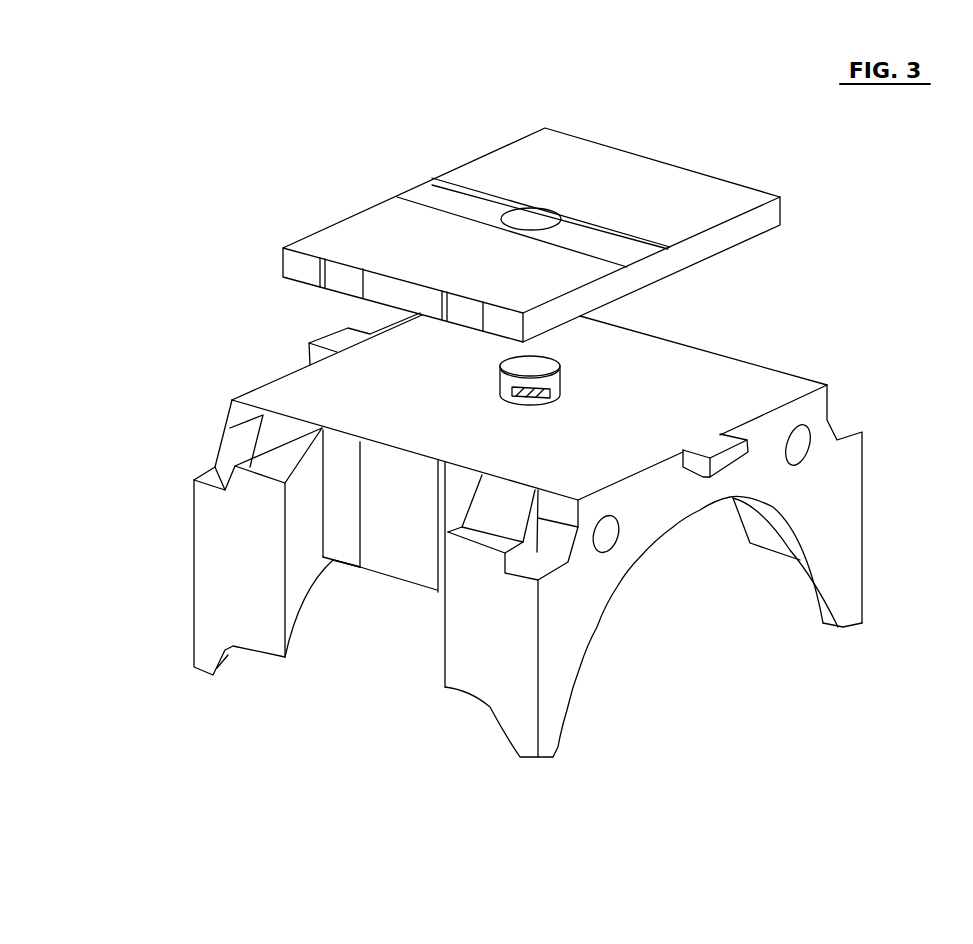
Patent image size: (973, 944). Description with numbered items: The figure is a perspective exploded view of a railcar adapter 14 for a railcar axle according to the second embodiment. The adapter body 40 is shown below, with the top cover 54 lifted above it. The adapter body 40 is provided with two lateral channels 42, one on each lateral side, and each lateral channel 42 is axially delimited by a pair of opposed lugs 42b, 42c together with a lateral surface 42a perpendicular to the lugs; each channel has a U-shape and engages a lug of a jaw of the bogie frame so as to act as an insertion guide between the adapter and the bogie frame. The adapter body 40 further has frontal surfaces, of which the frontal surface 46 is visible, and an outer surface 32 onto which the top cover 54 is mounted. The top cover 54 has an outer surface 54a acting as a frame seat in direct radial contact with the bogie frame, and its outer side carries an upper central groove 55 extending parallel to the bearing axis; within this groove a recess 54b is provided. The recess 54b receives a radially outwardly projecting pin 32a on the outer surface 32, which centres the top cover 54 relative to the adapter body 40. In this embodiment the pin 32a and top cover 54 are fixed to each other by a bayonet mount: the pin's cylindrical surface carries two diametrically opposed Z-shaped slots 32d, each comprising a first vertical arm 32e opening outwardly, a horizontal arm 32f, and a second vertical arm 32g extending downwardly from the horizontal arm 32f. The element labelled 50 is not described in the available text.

The railcar adapter 14 is at (211, 234).
The top cover 54 is at (365, 220).
The outer surface 54a is at (687, 170).
The recess 54b is at (532, 206).
The upper central groove 55 is at (443, 176).
The outer surface 32 is at (282, 400).
The pin 32a is at (309, 343).
The Z-shaped slot 32d is at (323, 342).
The first vertical arm 32e is at (560, 382).
The horizontal arm 32f is at (542, 396).
The second vertical arm 32g is at (520, 420).
The adapter body 40 is at (868, 440).
The frontal surface 46 is at (807, 507).
The foot 50 is at (855, 605).
The lateral channel 42 is at (200, 783).
The lateral surface 42a is at (393, 572).
The lug 42b is at (260, 660).
The lug 42c is at (463, 665).